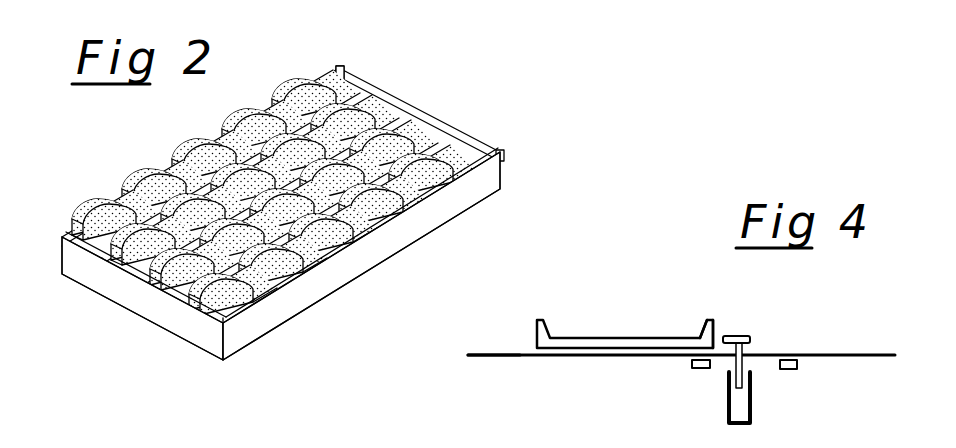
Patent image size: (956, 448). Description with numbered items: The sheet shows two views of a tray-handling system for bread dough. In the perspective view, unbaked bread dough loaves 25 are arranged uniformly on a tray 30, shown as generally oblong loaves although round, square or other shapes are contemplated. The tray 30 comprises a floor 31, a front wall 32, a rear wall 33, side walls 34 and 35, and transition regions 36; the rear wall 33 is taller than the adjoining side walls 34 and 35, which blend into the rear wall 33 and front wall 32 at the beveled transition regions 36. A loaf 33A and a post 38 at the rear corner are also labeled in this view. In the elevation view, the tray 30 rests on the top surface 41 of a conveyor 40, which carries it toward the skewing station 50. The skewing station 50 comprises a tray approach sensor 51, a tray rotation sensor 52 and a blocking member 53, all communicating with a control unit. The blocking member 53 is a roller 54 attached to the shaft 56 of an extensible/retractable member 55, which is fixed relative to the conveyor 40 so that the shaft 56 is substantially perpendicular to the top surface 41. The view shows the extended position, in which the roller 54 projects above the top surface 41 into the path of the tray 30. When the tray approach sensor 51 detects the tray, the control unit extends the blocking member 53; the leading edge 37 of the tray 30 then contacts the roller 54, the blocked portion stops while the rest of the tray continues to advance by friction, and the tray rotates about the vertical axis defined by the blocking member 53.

In FIG. 2, the unbaked bread dough loaves 25 is at (413, 213).
In FIG. 2, the tray 30 is at (288, 183).
In FIG. 4, the tray 30 is at (540, 319).
In FIG. 2, the floor 31 is at (190, 310).
In FIG. 2, the front wall 32 is at (357, 271).
In FIG. 2, the rear wall 33 is at (293, 177).
In FIG. 2, the end bun 33A is at (334, 78).
In FIG. 2, the side wall 34 is at (393, 108).
In FIG. 2, the side wall 35 is at (117, 293).
In FIG. 2, the transition regions 36 is at (348, 73).
In FIG. 4, the leading edge 37 is at (708, 319).
In FIG. 2, the post top 38 is at (346, 60).
In FIG. 4, the conveyor 40 is at (494, 378).
In FIG. 4, the top surface 41 is at (506, 353).
In FIG. 4, the skewing station 50 is at (743, 363).
In FIG. 4, the tray approach sensor 51 is at (692, 364).
In FIG. 4, the tray rotation sensor 52 is at (797, 364).
In FIG. 4, the blocking member 53 is at (764, 411).
In FIG. 4, the roller 54 is at (755, 343).
In FIG. 4, the extensible/retractable member 55 is at (710, 393).
In FIG. 4, the shaft 56 is at (748, 365).